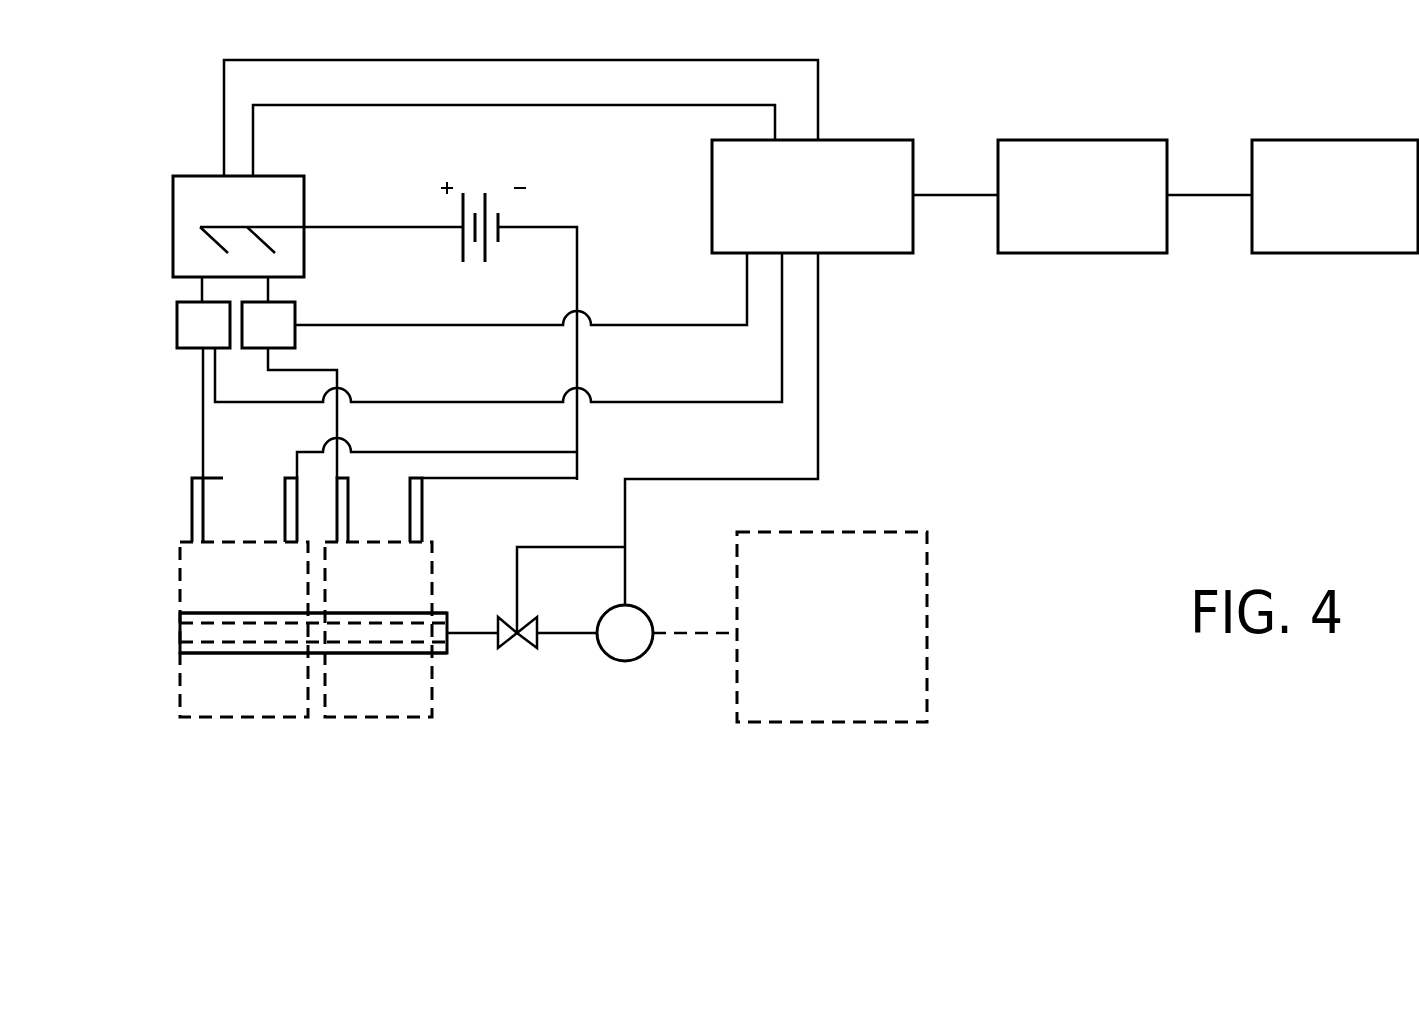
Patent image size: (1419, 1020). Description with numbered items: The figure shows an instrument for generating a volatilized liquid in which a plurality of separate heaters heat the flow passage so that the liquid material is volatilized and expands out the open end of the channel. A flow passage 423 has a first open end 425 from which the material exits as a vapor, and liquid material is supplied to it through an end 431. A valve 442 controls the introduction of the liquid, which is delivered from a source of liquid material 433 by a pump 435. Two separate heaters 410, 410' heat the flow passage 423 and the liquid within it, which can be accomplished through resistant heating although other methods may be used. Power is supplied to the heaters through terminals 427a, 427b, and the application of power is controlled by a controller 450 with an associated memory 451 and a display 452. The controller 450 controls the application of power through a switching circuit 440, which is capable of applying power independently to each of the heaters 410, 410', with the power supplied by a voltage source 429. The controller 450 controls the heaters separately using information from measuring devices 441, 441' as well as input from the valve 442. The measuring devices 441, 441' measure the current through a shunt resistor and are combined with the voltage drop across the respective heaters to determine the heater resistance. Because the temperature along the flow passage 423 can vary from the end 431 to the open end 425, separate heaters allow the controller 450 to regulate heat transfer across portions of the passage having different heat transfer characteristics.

The switching circuit 440 is at (330, 211).
The voltage source 429 is at (488, 203).
The measuring device 441 is at (148, 325).
The measuring device 441' is at (330, 319).
The terminal 427a is at (190, 518).
The terminal 427b is at (285, 518).
The first open end 425 is at (180, 633).
The flow passage 423 is at (208, 653).
The heater 410 is at (244, 680).
The heater 410' is at (378, 680).
The end 431 is at (440, 653).
The valve 442 is at (518, 652).
The pump 435 is at (625, 661).
The source of liquid material 433 is at (863, 722).
The controller 450 is at (877, 140).
The memory 451 is at (1132, 140).
The display 452 is at (1387, 140).